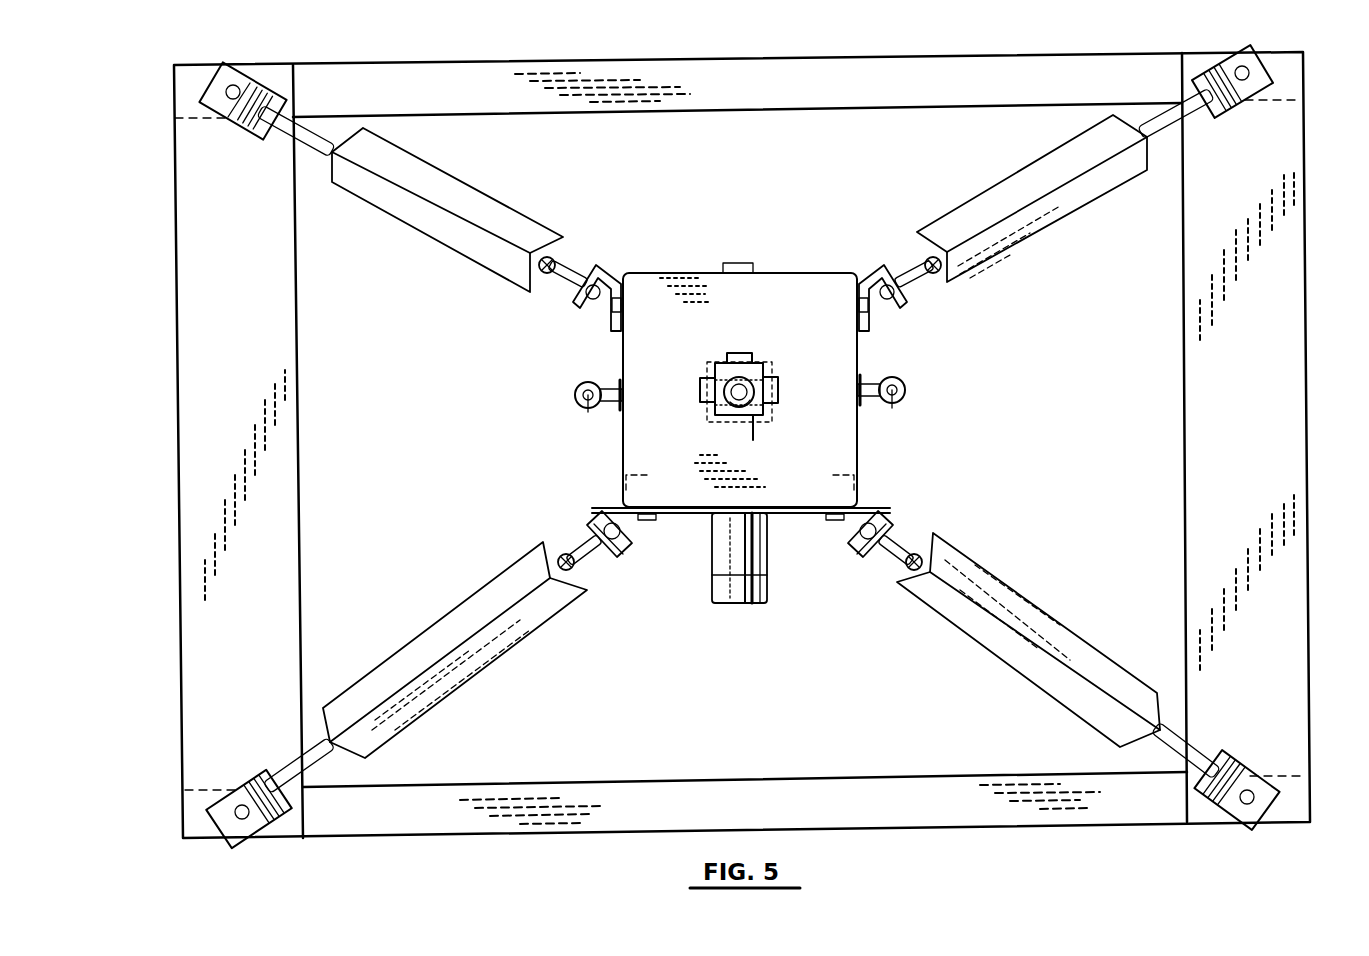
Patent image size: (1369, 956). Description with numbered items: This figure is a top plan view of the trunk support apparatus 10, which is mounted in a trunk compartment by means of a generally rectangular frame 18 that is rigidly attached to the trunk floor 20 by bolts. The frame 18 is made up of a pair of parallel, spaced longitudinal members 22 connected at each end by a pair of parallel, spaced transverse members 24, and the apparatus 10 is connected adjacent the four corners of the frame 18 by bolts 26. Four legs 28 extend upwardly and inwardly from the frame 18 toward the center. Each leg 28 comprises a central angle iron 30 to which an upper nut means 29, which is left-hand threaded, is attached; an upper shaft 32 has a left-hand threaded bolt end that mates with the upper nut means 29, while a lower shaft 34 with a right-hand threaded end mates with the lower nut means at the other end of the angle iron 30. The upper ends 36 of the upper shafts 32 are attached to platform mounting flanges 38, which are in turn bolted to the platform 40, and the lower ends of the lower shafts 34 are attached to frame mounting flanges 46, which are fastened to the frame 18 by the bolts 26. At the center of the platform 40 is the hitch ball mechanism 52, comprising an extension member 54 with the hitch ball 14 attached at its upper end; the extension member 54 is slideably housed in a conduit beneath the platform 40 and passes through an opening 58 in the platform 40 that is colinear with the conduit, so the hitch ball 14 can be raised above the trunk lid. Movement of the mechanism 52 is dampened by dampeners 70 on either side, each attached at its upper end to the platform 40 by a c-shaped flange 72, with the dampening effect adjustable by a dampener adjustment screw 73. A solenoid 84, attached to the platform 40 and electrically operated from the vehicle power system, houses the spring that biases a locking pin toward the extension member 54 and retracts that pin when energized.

The trunk support apparatus 10 is at (545, 470).
The hitch ball 14 is at (728, 402).
The frame 18 is at (467, 840).
The trunk floor 20 is at (1092, 456).
The longitudinal members 22 is at (303, 432).
The transverse members 24 is at (785, 95).
The bolts 26 is at (228, 92).
The legs 28 is at (487, 197).
The upper nut means 29 is at (565, 255).
The central angle iron 30 is at (425, 223).
The upper shaft 32 is at (564, 286).
The lower shaft 34 is at (308, 142).
The upper ends of upper shafts 36 is at (595, 300).
The platform mounting flanges 38 is at (605, 278).
The platform 40 is at (776, 285).
The frame mounting flanges 46 is at (242, 125).
The hitch ball mechanism 52 is at (718, 363).
The extension member 54 is at (755, 377).
The opening 58 is at (754, 418).
The dampeners 70 is at (574, 396).
The c-shaped flange 72 is at (590, 382).
The dampener adjustment screw 73 is at (588, 405).
The solenoid 84 is at (727, 595).